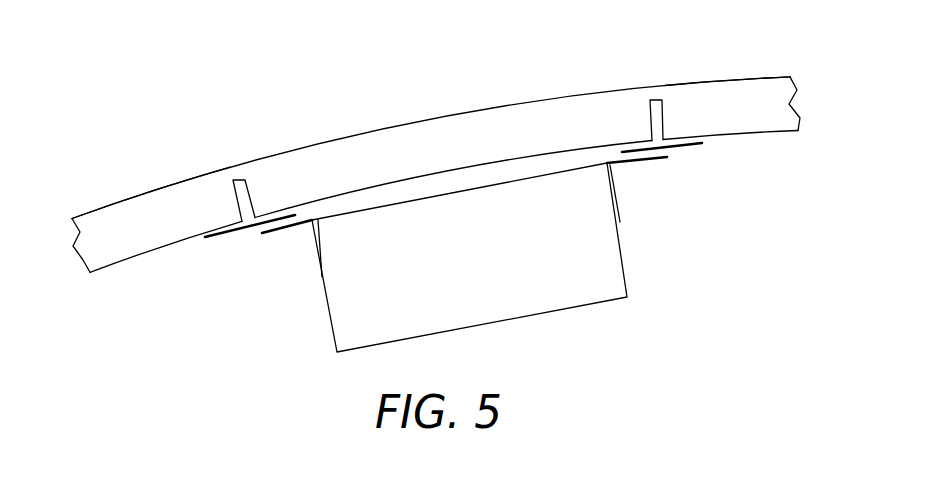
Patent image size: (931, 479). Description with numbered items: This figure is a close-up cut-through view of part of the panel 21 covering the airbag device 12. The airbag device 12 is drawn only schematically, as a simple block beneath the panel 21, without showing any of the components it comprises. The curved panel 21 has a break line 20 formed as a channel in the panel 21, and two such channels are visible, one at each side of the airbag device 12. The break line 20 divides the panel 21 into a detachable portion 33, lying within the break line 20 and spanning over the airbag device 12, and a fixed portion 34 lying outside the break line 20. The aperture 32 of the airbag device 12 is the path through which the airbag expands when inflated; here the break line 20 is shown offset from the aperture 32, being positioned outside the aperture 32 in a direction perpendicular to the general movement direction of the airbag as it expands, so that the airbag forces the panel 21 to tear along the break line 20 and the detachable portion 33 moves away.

The airbag device 12 is at (612, 257).
The break line 20 is at (237, 180).
The panel 21 is at (753, 90).
The aperture 32 is at (491, 174).
The detachable portion 33 is at (422, 132).
The fixed portion 34 is at (130, 208).